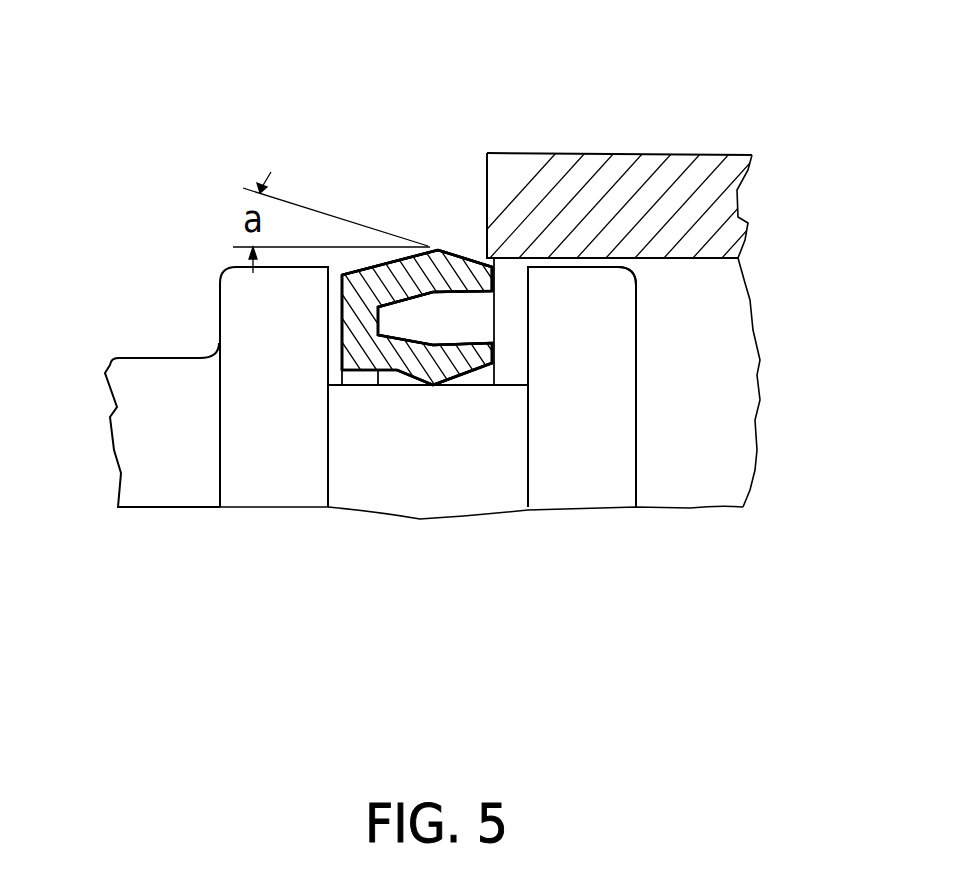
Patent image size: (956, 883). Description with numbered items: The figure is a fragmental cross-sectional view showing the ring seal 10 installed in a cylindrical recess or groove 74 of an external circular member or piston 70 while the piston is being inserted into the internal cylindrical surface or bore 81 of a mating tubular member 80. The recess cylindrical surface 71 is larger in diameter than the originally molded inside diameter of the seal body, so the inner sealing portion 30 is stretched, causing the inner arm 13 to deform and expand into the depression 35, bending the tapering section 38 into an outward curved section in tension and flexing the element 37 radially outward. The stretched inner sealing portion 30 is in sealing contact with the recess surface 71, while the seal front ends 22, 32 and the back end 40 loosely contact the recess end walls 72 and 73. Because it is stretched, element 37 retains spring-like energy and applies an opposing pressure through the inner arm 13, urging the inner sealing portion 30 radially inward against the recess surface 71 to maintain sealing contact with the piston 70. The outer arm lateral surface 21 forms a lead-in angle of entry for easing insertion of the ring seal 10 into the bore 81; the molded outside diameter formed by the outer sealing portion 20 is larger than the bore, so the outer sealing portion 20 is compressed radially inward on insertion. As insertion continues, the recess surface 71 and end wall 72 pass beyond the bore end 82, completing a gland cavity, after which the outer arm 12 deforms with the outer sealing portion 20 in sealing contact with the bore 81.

The ring seal 10 is at (342, 317).
The outer arm 12 is at (473, 257).
The inner arm 13 is at (494, 384).
The outer sealing portion 20 is at (442, 248).
The outer arm lateral surface 21 is at (452, 253).
The seal front end 22 is at (497, 278).
The inner sealing portion 30 is at (435, 383).
The seal front end 32 is at (495, 361).
The depression 35 is at (460, 320).
The element 37 is at (465, 375).
The tapering section 38 is at (398, 360).
The back end 40 is at (342, 337).
The external circular member or piston 70 is at (150, 445).
The recess cylindrical surface 71 is at (370, 388).
The recess end wall 72 is at (329, 347).
The recess end wall 73 is at (528, 377).
The cylindrical recess or groove 74 is at (330, 385).
The mating tubular member 80 is at (598, 153).
The internal cylindrical surface or bore 81 is at (708, 260).
The bore end 82 is at (487, 177).